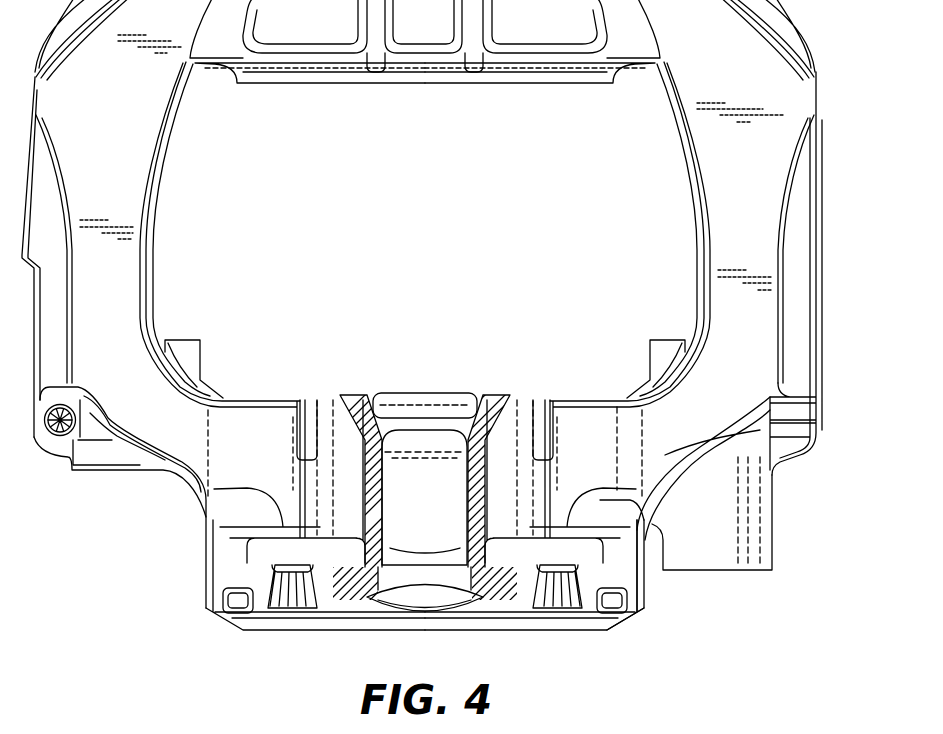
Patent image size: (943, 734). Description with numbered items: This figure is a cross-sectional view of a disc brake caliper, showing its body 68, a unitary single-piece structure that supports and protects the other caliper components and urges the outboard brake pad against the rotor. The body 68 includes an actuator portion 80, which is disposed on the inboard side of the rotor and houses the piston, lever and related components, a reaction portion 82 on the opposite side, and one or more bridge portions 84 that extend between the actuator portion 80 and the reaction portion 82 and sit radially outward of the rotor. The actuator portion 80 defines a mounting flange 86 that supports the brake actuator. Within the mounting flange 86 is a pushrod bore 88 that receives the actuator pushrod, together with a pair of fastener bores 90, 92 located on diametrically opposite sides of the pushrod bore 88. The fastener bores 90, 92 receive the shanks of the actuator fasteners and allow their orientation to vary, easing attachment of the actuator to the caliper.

The body 68 is at (150, 491).
The actuator portion 80 is at (630, 463).
The reaction portion 82 is at (542, 42).
The bridge portion 84 is at (793, 272).
The mounting flange 86 is at (618, 553).
The pushrod bore 88 is at (412, 525).
The fastener bore 90 is at (293, 600).
The fastener bore 92 is at (565, 600).